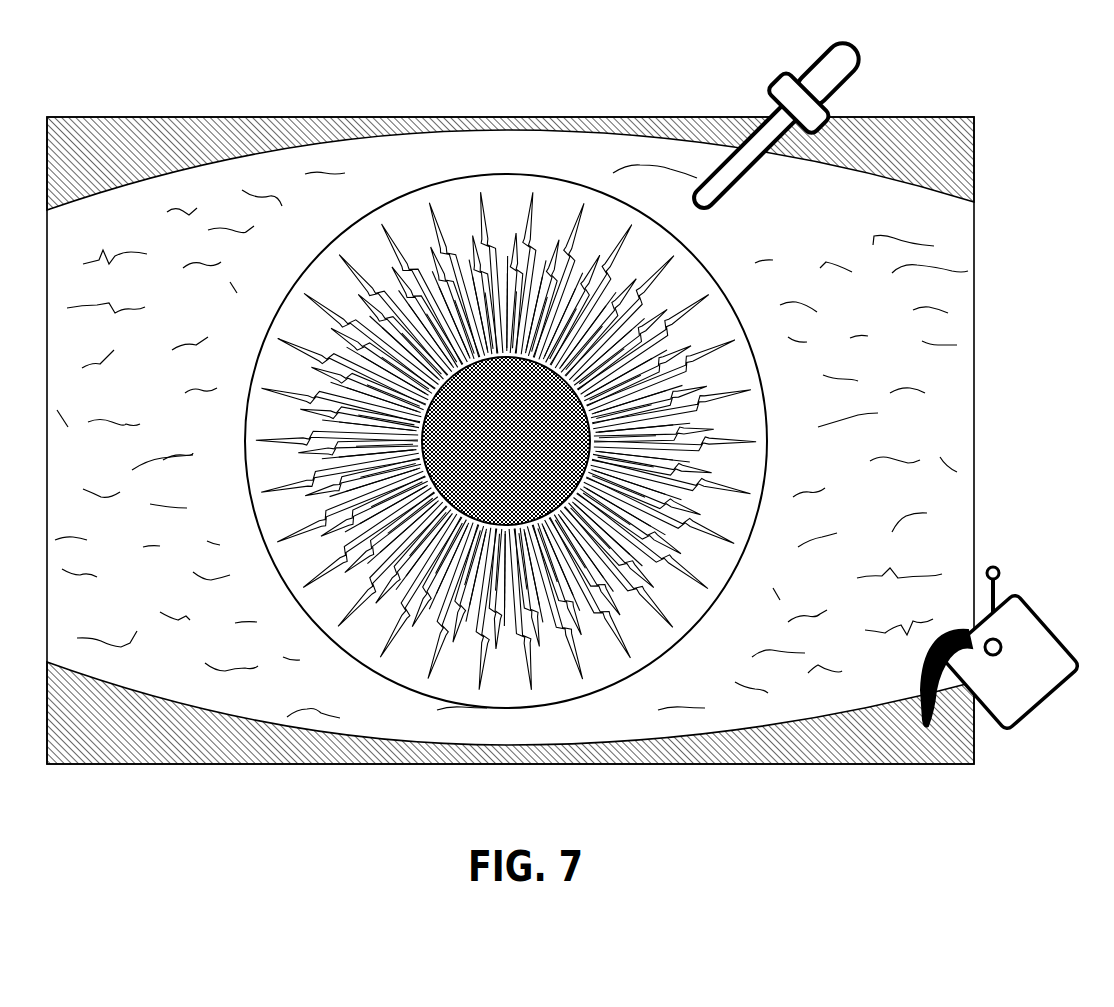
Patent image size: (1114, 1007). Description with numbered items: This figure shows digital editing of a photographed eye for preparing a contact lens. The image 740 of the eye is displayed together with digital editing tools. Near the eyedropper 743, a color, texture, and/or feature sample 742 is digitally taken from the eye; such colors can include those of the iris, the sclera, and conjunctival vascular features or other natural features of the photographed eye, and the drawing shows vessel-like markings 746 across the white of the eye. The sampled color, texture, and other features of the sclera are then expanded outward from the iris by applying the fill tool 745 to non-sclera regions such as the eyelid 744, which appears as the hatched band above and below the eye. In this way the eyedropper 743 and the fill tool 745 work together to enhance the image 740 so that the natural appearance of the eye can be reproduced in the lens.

The image 740 is at (125, 115).
The color, texture, and/or feature sample 742 is at (716, 216).
The eyedropper 743 is at (803, 65).
The eyelid 744 is at (795, 748).
The fill tool 745 is at (1027, 606).
The blood vessel 746 is at (973, 270).